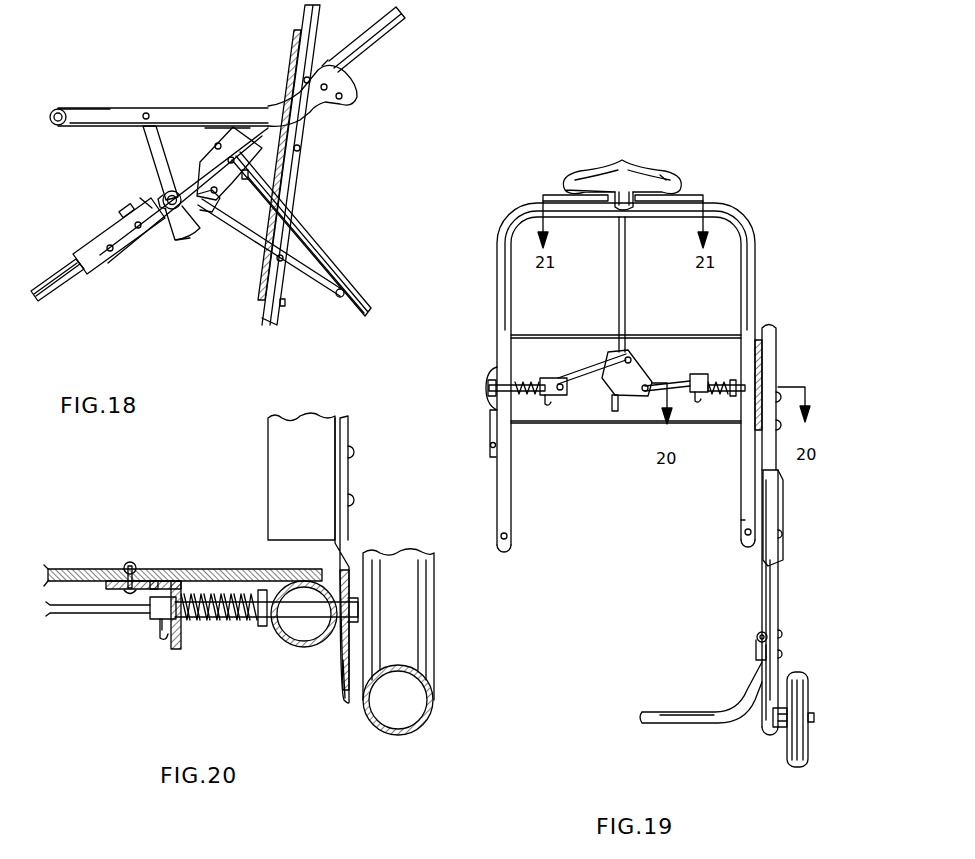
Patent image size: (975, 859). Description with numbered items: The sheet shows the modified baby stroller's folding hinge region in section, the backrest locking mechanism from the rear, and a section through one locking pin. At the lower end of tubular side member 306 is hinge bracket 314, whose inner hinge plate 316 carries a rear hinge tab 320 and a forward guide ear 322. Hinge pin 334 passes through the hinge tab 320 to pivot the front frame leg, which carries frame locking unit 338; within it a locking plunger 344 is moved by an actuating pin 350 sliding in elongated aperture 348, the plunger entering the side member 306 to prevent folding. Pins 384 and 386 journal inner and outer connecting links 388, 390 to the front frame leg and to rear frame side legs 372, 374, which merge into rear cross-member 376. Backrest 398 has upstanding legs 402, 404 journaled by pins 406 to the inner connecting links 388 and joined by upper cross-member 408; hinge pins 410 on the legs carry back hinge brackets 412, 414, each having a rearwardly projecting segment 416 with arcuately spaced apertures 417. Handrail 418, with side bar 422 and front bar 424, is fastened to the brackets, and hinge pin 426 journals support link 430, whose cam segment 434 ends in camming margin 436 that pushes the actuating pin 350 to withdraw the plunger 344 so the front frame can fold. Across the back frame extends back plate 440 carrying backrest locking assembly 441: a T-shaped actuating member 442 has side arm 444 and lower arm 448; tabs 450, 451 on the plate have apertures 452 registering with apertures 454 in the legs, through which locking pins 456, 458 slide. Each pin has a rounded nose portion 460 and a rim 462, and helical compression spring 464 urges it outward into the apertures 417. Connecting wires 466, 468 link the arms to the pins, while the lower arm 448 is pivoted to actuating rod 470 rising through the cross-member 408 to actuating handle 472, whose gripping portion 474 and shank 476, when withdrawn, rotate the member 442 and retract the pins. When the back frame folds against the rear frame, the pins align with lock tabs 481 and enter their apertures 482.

In FIG. 18, the side member 306 is at (403, 22).
In FIG. 20, the side member 306 is at (436, 698).
In FIG. 18, the hinge bracket 314 is at (146, 182).
In FIG. 18, the inner hinge plate 316 is at (206, 150).
In FIG. 18, the hinge tab 320 is at (232, 165).
In FIG. 18, the guide ear 322 is at (164, 210).
In FIG. 18, the hinge pin 334 is at (210, 208).
In FIG. 18, the frame locking unit 338 is at (88, 236).
In FIG. 18, the locking plunger 344 is at (136, 196).
In FIG. 18, the elongated aperture 348 is at (105, 205).
In FIG. 18, the actuating pin 350 is at (130, 212).
In FIG. 19, the side leg 372 is at (779, 616).
In FIG. 18, the side leg 374 is at (333, 270).
In FIG. 19, the rear cross-member 376 is at (668, 710).
In FIG. 18, the pin 384 is at (172, 212).
In FIG. 18, the pin 386 is at (345, 293).
In FIG. 19, the inner connecting link 388 is at (768, 553).
In FIG. 18, the outer connecting link 390 is at (311, 287).
In FIG. 19, the outer connecting link 390 is at (785, 530).
In FIG. 19, the backrest 398 is at (490, 329).
In FIG. 19, the upstanding leg 402 is at (512, 495).
In FIG. 18, the upstanding leg 404 is at (308, 14).
In FIG. 19, the upstanding leg 404 is at (742, 486).
In FIG. 18, the pin 406 is at (285, 256).
In FIG. 19, the pin 406 is at (741, 512).
In FIG. 19, the upper cross-member 408 is at (597, 219).
In FIG. 18, the hinge pin 410 is at (301, 148).
In FIG. 19, the back hinge bracket 412 is at (488, 403).
In FIG. 18, the back hinge bracket 414 is at (358, 100).
In FIG. 20, the back hinge bracket 414 is at (350, 487).
In FIG. 19, the back hinge bracket 414 is at (762, 326).
In FIG. 20, the rearwardly projecting segment 416 is at (343, 672).
In FIG. 18, the arcuately spaced apertures 417 is at (343, 94).
In FIG. 20, the arcuately spaced apertures 417 is at (352, 606).
In FIG. 18, the handrail 418 is at (77, 100).
In FIG. 18, the side bar 422 is at (115, 108).
In FIG. 20, the side bar 422 is at (278, 492).
In FIG. 18, the front bar 424 is at (190, 175).
In FIG. 18, the hinge pin 426 is at (148, 112).
In FIG. 18, the support link 430 is at (148, 133).
In FIG. 18, the cam segment 434 is at (190, 222).
In FIG. 18, the camming margin 436 is at (185, 228).
In FIG. 20, the back plate 440 is at (90, 567).
In FIG. 19, the back plate 440 is at (553, 334).
In FIG. 19, the backrest locking assembly 441 is at (625, 435).
In FIG. 19, the actuating member 442 is at (655, 336).
In FIG. 19, the side arm 444 is at (630, 336).
In FIG. 19, the lower arm 448 is at (608, 396).
In FIG. 19, the tab 450 is at (548, 398).
In FIG. 20, the tab 451 is at (182, 588).
In FIG. 19, the tab 451 is at (705, 395).
In FIG. 20, the aperture 452 is at (167, 626).
In FIG. 20, the aperture 454 is at (350, 622).
In FIG. 19, the locking pin 456 is at (490, 384).
In FIG. 18, the locking pin 458 is at (322, 62).
In FIG. 19, the locking pin 458 is at (732, 378).
In FIG. 20, the rounded nose portion 460 is at (360, 608).
In FIG. 20, the rim 462 is at (263, 630).
In FIG. 20, the helical compression spring 464 is at (215, 628).
In FIG. 19, the connecting wire 466 is at (593, 336).
In FIG. 19, the connecting wire 468 is at (689, 336).
In FIG. 19, the actuating rod 470 is at (628, 232).
In FIG. 19, the actuating handle 472 is at (660, 165).
In FIG. 19, the gripping portion 474 is at (592, 170).
In FIG. 19, the shank 476 is at (625, 190).
In FIG. 19, the lock tab 481 is at (756, 650).
In FIG. 19, the aperture 482 is at (757, 636).